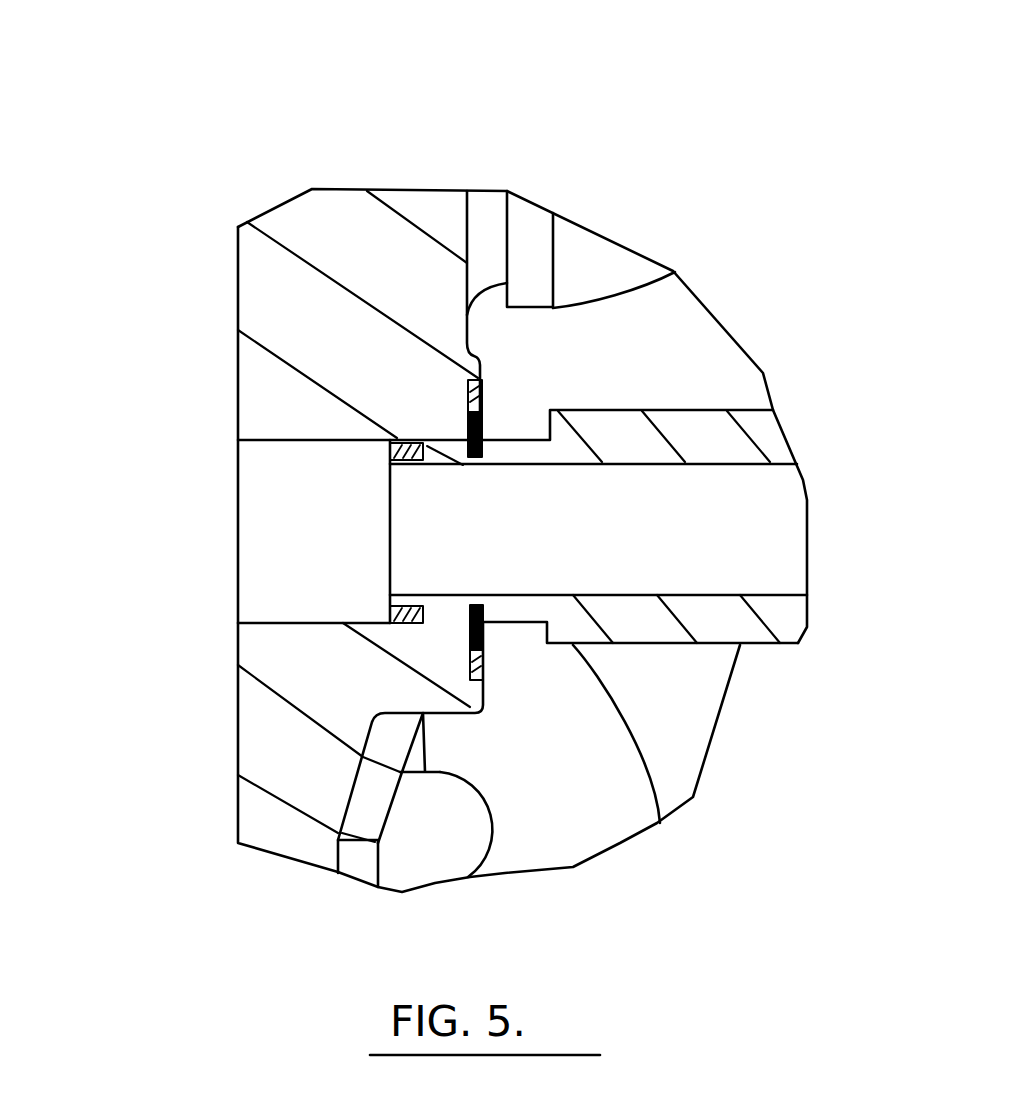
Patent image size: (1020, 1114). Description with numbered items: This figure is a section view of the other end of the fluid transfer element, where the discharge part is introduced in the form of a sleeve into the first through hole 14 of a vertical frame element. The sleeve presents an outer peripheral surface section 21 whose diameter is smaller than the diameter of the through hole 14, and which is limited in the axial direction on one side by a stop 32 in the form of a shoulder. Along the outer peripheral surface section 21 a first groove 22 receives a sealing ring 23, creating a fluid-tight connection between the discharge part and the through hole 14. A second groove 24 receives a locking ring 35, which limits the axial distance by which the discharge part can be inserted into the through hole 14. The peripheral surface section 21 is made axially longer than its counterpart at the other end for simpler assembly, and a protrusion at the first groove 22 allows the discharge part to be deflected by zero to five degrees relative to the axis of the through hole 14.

The first through hole 14 is at (263, 573).
The outer peripheral surface section 21 is at (477, 383).
The first groove 22 is at (392, 456).
The sealing ring 23 is at (400, 438).
The second groove 24 is at (468, 446).
The stop 32 is at (547, 437).
The locking ring 35 is at (485, 647).